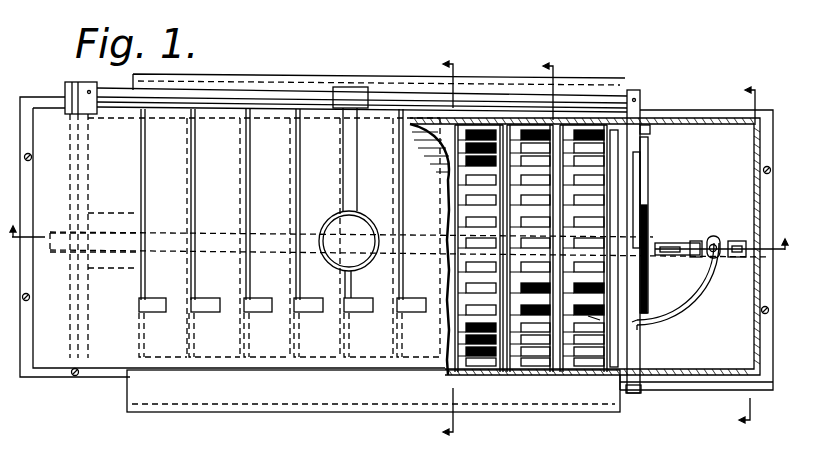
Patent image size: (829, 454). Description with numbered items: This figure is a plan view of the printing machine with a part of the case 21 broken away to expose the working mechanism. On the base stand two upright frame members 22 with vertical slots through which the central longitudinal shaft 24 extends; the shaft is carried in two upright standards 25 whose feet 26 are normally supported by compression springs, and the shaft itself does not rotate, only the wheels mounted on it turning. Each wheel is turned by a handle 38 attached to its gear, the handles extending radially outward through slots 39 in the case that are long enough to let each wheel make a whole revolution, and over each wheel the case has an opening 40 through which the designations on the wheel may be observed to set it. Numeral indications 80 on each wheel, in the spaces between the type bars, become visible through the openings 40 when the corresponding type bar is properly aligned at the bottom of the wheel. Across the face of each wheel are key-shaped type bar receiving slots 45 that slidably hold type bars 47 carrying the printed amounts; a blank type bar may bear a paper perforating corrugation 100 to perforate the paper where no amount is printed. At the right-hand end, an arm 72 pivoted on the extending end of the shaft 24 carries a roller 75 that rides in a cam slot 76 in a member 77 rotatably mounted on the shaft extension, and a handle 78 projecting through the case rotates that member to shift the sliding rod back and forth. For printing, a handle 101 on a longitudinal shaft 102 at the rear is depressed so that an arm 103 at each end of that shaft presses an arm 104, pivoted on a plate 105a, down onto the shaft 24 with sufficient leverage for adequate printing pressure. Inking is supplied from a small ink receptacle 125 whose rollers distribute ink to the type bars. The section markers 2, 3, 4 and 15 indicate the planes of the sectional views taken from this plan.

The section line 2- 2 is at (397, 249).
The section line 3- 3 is at (556, 87).
The section line 4- 4 is at (454, 246).
The section line 15- 15 is at (757, 252).
The case 21 is at (689, 124).
The upright frame member 22 is at (633, 91).
The central longitudinal shaft 24 is at (155, 232).
The upright standard 25 is at (88, 141).
The feet 26 is at (739, 241).
The handle 38 is at (249, 246).
The slot 39 is at (190, 168).
The opening 40 is at (157, 313).
The type bar receiving slot 45 is at (452, 266).
The type bar 47 is at (490, 355).
The arm 72 is at (699, 241).
The roller 75 is at (716, 237).
The cam slot 76 is at (710, 271).
The member 77 is at (657, 306).
The handle 78 is at (635, 395).
The numeral indications 80 is at (523, 135).
The paper perforating corrugation 100 is at (600, 320).
The handle 101 is at (364, 244).
The longitudinal shaft 102 is at (383, 98).
The arm 103 is at (643, 128).
The arm 104 is at (70, 190).
The plate 105a is at (636, 208).
The ink receptacle 125 is at (307, 77).